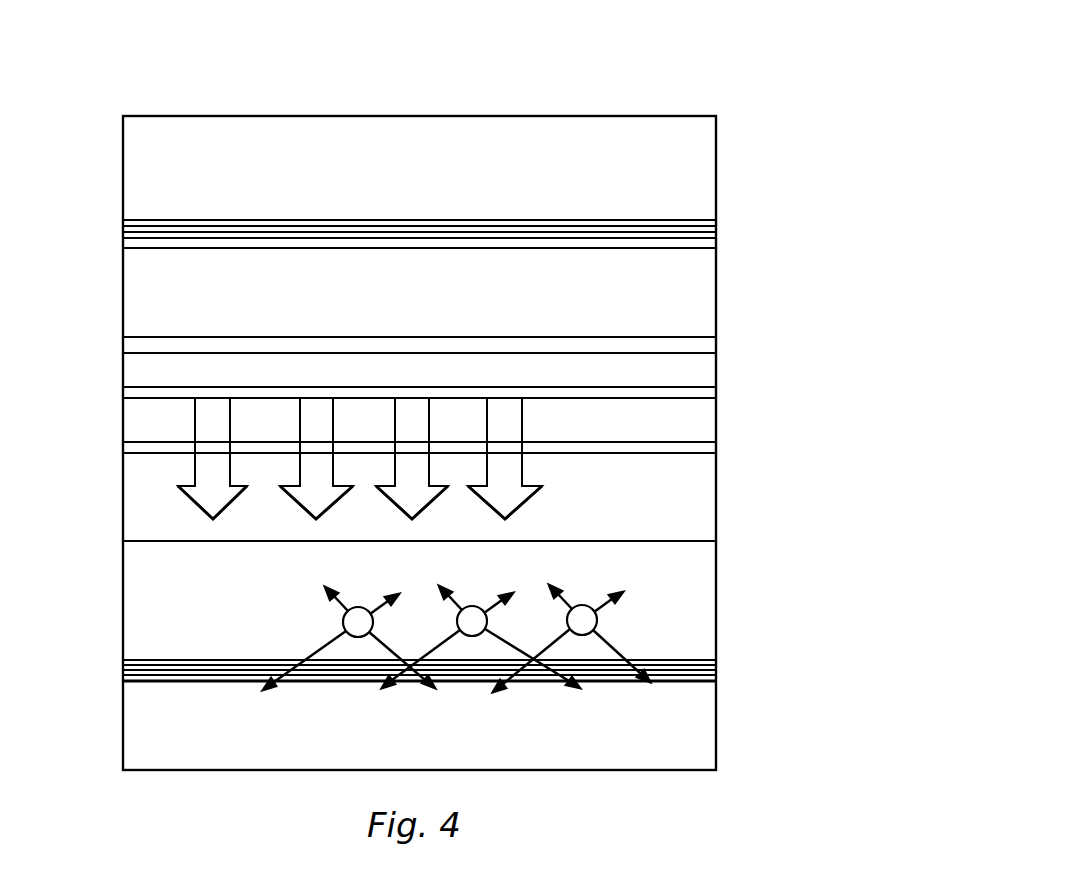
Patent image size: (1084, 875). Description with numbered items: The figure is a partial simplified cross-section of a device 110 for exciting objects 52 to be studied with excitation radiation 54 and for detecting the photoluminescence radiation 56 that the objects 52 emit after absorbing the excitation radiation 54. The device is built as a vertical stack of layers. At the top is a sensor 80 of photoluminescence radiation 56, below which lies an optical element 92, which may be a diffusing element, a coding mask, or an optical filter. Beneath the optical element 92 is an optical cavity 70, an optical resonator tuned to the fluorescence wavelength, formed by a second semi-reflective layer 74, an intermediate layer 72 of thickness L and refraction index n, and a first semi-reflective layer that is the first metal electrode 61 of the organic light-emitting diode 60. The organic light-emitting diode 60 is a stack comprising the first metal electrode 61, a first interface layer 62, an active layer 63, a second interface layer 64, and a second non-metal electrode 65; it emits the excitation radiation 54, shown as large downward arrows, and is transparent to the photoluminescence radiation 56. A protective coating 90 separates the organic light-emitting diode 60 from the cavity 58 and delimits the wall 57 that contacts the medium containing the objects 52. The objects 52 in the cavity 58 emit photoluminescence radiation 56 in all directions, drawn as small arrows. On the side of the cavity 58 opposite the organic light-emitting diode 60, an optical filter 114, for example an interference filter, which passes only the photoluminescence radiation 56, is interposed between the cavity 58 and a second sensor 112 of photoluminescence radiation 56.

The device 110 is at (722, 72).
The sensor 80 is at (142, 176).
The optical element 92 is at (140, 231).
The second semi-reflective layer 74 is at (701, 243).
The intermediate layer 72 is at (703, 299).
The optical cavity 70 is at (410, 277).
The organic light-emitting diode 60 is at (410, 396).
The first metal electrode 61 is at (702, 349).
The first interface layer 62 is at (702, 376).
The active layer 63 is at (703, 392).
The second interface layer 64 is at (703, 417).
The second non-metal electrode 65 is at (703, 446).
The protective coating 90 is at (703, 500).
The excitation radiation 54 is at (203, 467).
The wall 57 is at (137, 541).
The cavity 58 is at (143, 598).
The objects to be studied 52 is at (585, 620).
The photoluminescence radiation 56 is at (601, 605).
The optical filter 114 is at (703, 672).
The sensor 112 is at (693, 745).